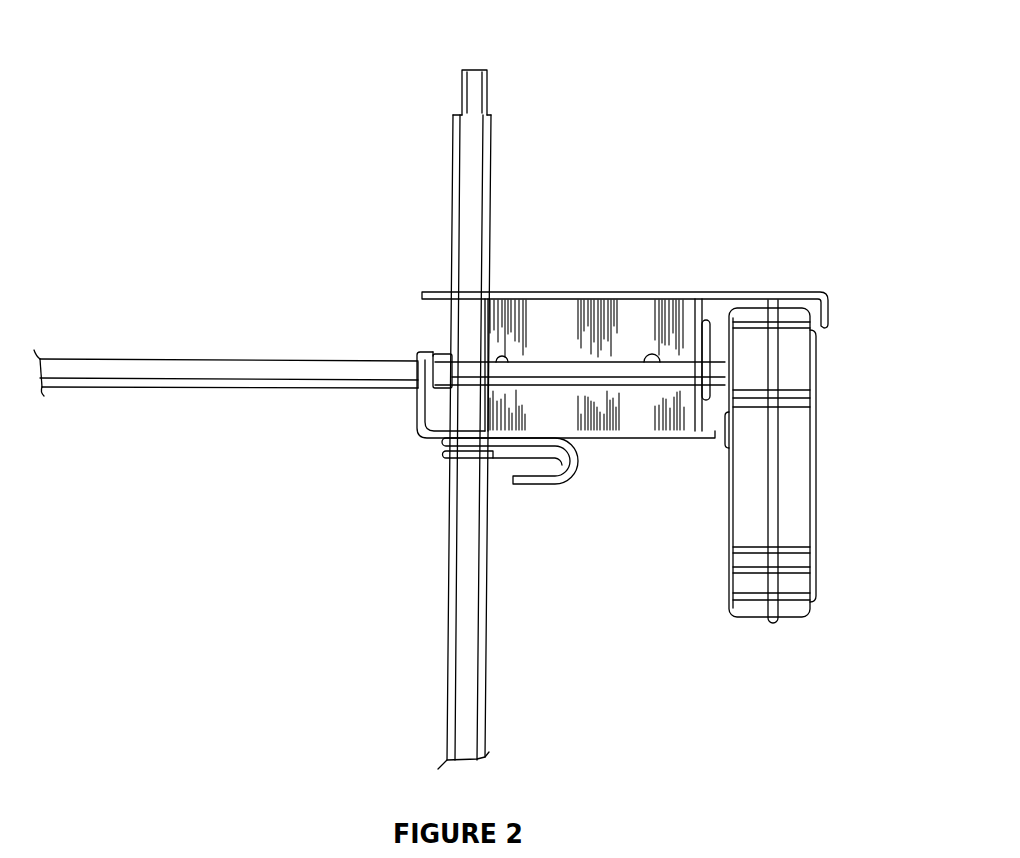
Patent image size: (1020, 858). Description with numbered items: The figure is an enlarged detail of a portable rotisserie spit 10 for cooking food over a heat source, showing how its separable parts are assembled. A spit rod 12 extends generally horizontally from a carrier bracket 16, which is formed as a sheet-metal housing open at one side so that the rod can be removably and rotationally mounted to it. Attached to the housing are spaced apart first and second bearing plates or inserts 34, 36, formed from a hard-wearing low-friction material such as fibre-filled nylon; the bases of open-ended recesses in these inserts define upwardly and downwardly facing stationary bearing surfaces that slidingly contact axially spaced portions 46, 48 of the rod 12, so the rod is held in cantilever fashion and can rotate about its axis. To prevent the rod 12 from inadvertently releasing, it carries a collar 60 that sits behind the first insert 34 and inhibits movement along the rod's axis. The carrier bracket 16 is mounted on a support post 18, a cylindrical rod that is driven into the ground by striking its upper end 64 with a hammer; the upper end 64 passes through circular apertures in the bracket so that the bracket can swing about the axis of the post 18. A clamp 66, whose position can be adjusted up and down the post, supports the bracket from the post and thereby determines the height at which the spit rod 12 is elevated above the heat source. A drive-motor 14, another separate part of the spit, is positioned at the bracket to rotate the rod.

The portable rotisserie spit 10 is at (275, 583).
The spit rod 12 is at (120, 358).
The drive-motor 14 is at (788, 500).
The carrier bracket 16 is at (573, 318).
The support post 18 is at (478, 158).
The first bearing plate or insert 34 is at (708, 330).
The second bearing plate or insert 36 is at (417, 365).
The axially spaced portion of the rod 46 is at (716, 357).
The axially spaced portion of the rod 48 is at (412, 392).
The collar 60 is at (446, 386).
The upper end of the post 64 is at (498, 66).
The clamp 66 is at (538, 488).